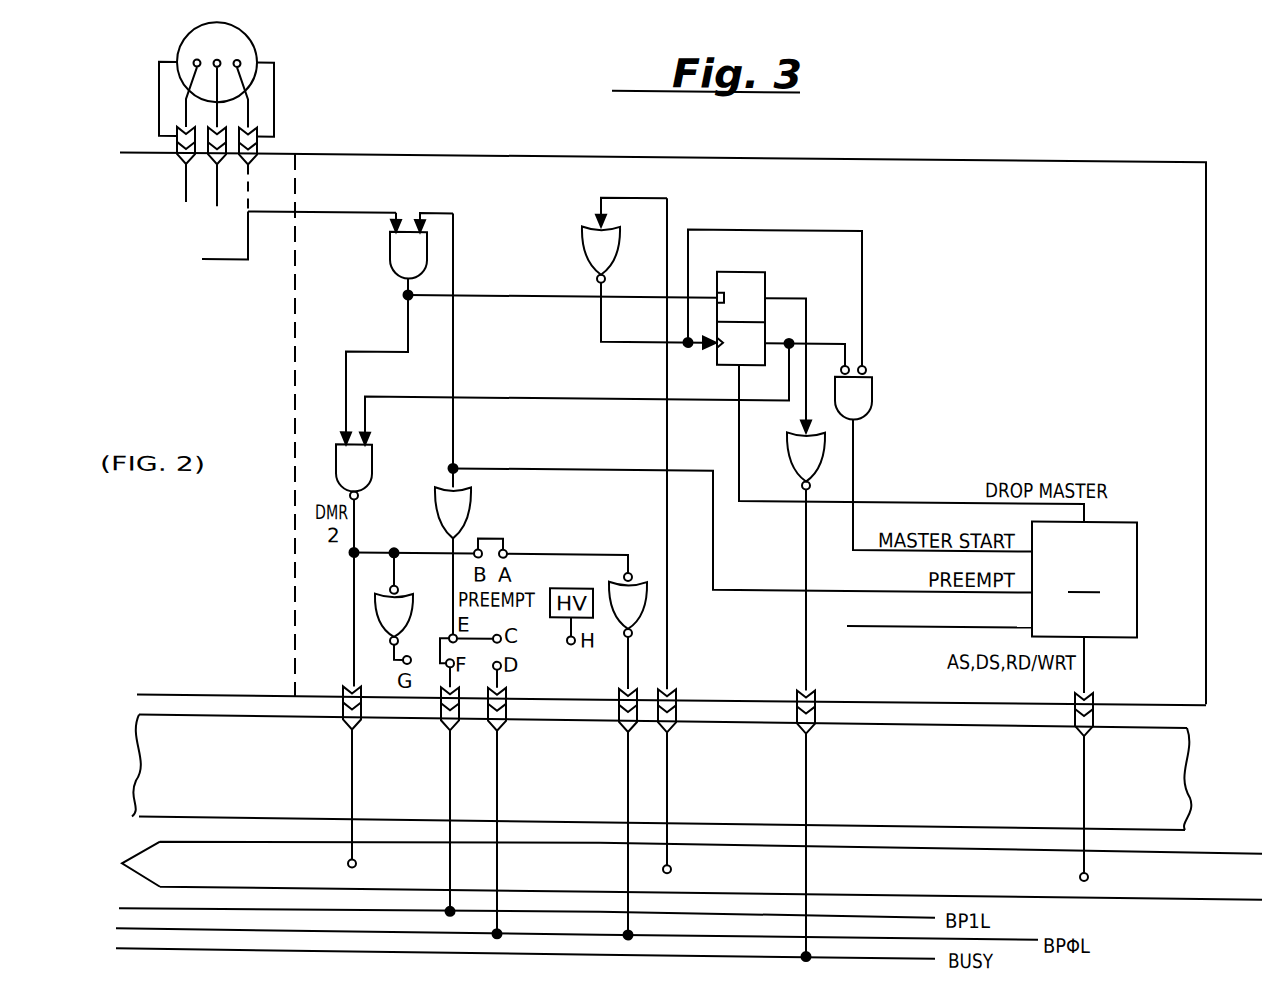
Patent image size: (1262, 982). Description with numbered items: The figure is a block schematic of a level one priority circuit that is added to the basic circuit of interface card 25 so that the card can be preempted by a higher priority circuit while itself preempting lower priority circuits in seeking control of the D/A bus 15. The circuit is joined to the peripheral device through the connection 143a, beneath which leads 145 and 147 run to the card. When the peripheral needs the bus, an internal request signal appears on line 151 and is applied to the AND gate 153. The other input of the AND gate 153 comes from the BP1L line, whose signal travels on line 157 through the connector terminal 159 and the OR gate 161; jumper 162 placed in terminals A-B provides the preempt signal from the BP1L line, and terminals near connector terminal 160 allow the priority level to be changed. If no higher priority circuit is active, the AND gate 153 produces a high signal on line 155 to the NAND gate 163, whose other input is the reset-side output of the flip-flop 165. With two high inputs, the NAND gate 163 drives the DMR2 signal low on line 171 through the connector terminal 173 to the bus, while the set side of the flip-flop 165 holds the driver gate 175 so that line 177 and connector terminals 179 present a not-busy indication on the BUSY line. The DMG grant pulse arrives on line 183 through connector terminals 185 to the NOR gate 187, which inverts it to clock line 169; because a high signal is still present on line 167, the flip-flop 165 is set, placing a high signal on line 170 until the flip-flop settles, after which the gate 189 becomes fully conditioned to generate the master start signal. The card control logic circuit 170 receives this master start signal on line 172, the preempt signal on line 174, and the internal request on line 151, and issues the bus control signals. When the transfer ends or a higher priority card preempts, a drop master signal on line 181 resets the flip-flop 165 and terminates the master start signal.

The D/A bus 15 is at (1215, 849).
The interface card 25 is at (932, 172).
The connection 143a is at (242, 44).
The lead 145 is at (185, 187).
The lead 147 is at (217, 199).
The internal request line 151 is at (276, 214).
The AND gate 153 is at (400, 262).
The line 155 is at (377, 352).
The line 157 is at (448, 791).
The connector terminal 159 is at (461, 738).
The connector terminal 160 is at (508, 691).
The OR gate 161 is at (460, 506).
The jumper 162 is at (507, 536).
The NAND gate 163 is at (363, 464).
The flip-flop 165 is at (765, 274).
The line 167 is at (553, 298).
The clock line 169 is at (699, 346).
The card control logic circuit 170 is at (755, 226).
The line 171 is at (350, 610).
The master start line 172 is at (857, 450).
The connector terminal 173 is at (342, 730).
The preempt line 174 is at (453, 433).
The driver gate 175 is at (792, 446).
The line 177 is at (803, 626).
The connector terminal 179 is at (798, 732).
The reset line 181 is at (770, 499).
The DMG line 183 is at (670, 771).
The connector terminal 185 is at (682, 689).
The NOR gate 187 is at (597, 245).
The gate 189 is at (865, 388).